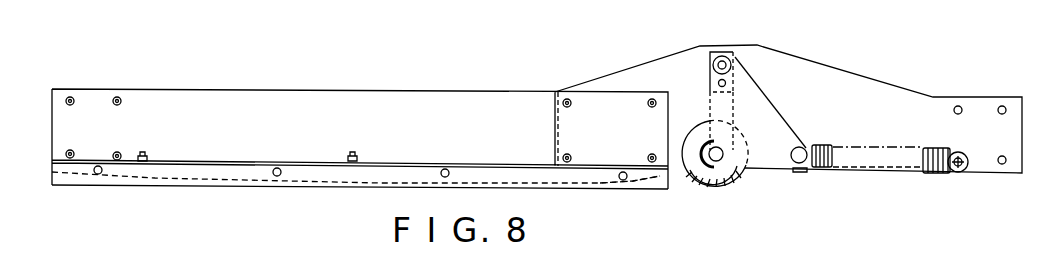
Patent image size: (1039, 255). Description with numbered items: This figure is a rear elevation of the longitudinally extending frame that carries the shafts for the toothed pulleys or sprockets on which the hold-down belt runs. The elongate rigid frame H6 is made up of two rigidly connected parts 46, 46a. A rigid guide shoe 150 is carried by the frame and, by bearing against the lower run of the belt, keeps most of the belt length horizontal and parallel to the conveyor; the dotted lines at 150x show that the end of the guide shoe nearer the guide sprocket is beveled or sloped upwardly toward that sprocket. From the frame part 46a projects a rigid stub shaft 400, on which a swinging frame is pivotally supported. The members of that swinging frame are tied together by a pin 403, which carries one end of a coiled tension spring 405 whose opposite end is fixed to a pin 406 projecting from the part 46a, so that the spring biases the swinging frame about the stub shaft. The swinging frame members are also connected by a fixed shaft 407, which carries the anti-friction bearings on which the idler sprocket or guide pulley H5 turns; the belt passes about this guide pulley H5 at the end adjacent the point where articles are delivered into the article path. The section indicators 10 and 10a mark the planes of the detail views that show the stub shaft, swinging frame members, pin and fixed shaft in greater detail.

The frame part 46 is at (300, 102).
The frame part 46a is at (837, 78).
The guide shoe 150 is at (203, 173).
The beveled end of guide shoe 150x is at (633, 182).
The stub shaft 400 is at (757, 47).
The pin 403 is at (817, 146).
The coiled tension spring 405 is at (932, 174).
The pin 406 is at (961, 152).
The fixed shaft 407 is at (722, 162).
The section line for FIG. 10 is at (697, 22).
The section line for FIG. 10a is at (677, 186).
The idler sprocket or guide pulley H5 is at (700, 185).
The elongate rigid frame H6 is at (530, 80).